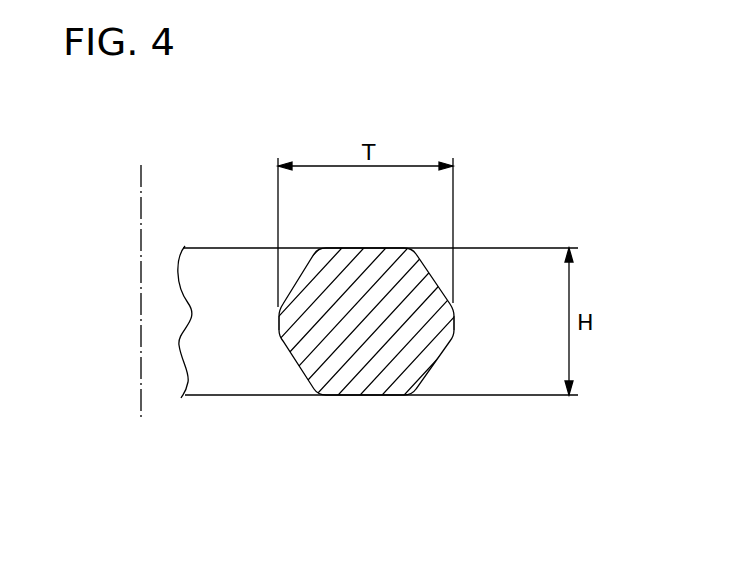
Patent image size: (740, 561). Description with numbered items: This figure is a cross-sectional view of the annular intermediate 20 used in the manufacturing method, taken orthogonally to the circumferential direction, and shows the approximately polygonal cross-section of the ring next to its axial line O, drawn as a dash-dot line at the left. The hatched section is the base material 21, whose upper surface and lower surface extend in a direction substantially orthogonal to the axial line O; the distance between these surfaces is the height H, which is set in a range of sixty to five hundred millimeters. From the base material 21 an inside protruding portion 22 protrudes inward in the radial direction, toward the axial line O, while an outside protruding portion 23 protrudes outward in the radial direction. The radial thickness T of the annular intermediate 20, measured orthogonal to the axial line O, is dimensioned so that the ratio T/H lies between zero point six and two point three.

The annular intermediate 20 is at (373, 291).
The base material 21 is at (383, 379).
The inside protruding portion 22 is at (284, 316).
The outside protruding portion 23 is at (448, 322).
The axial line O is at (141, 171).